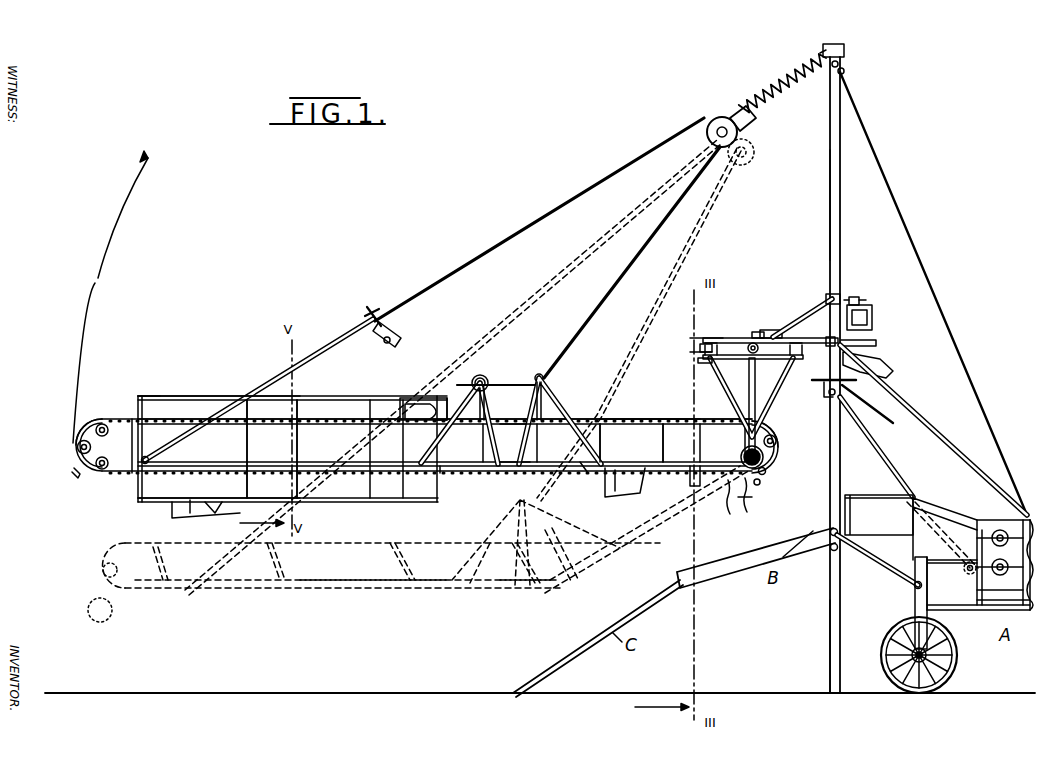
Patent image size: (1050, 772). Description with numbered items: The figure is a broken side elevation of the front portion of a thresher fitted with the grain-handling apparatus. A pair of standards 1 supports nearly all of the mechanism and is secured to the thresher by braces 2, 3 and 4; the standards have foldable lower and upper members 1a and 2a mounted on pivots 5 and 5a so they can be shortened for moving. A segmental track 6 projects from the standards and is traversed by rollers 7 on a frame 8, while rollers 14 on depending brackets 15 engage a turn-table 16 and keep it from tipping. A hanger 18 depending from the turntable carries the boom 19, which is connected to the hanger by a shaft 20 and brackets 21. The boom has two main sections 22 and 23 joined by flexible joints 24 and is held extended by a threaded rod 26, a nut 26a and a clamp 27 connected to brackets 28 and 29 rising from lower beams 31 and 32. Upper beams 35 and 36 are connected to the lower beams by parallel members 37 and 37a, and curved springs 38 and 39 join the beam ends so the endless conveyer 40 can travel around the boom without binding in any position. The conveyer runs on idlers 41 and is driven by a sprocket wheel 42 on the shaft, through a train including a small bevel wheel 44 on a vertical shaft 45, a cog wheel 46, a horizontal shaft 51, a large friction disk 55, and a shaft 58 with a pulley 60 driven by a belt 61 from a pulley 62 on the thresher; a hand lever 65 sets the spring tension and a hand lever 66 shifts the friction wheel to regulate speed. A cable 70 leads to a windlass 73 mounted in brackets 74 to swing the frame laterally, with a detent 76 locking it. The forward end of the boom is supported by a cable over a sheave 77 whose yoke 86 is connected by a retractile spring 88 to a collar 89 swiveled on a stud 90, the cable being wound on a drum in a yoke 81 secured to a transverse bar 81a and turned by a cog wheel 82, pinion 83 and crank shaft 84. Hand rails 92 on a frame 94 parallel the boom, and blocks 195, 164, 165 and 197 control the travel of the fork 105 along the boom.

The standards 1 is at (841, 467).
The foldable lower member 1a is at (822, 629).
The brace 2 is at (882, 571).
The foldable upper member 2a is at (829, 212).
The brace 3 is at (943, 451).
The brace 4 is at (972, 384).
The pivot 5 is at (827, 552).
The pivot 5a is at (829, 297).
The segmental track 6 is at (765, 331).
The rollers 7 is at (791, 325).
The frame 8 is at (700, 340).
The rollers 14 is at (700, 349).
The brackets 15 is at (700, 357).
The turn-table 16 is at (703, 365).
The hanger 18 is at (727, 393).
The boom 19 is at (427, 492).
The shaft 20 is at (760, 486).
The brackets 21 is at (745, 501).
The boom section 22 is at (612, 571).
The boom section 23 is at (425, 607).
The flexible joints 24 is at (510, 427).
The threaded rod 26 is at (512, 383).
The nut 26a is at (476, 376).
The clamp 27 is at (483, 377).
The bracket 28 is at (562, 399).
The bracket 29 is at (488, 404).
The lower beam 31 is at (580, 470).
The lower beam 32 is at (450, 473).
The upper beam 35 is at (627, 419).
The upper beam 36 is at (350, 420).
The parallel members 37 is at (553, 545).
The parallel members 37a is at (392, 571).
The curved spring 38 is at (780, 437).
The curved spring 39 is at (74, 457).
The endless conveyer 40 is at (110, 423).
The idlers 41 is at (73, 444).
The sprocket wheel 42 is at (768, 471).
The small bevel wheel 44 is at (742, 457).
The vertical shaft 45 is at (749, 407).
The cog wheel 46 is at (749, 344).
The horizontal shaft 51 is at (825, 346).
The large friction disk 55 is at (815, 381).
The shaft 58 is at (830, 396).
The pulley 60 is at (822, 396).
The belt 61 is at (903, 470).
The pulley 62 is at (964, 574).
The hand lever 65 is at (894, 374).
The hand lever 66 is at (893, 426).
The cable 70 is at (757, 335).
The windlass 73 is at (874, 322).
The brackets 74 is at (856, 308).
The detent 76 is at (583, 197).
The sheave 77 is at (711, 121).
The yoke 81 is at (281, 381).
The transverse bar 81a is at (143, 463).
The cog wheel 82 is at (398, 334).
The pinion 83 is at (366, 318).
The crank shaft 84 is at (383, 344).
The yoke 86 is at (738, 112).
The retractile spring 88 is at (786, 80).
The collar 89 is at (846, 60).
The stud 90 is at (846, 49).
The hand rails 92 is at (158, 400).
The frame 94 is at (137, 397).
The fork 105 is at (230, 514).
The block 164 is at (73, 470).
The block 165 is at (752, 494).
The block 195 is at (76, 437).
The block 197 is at (731, 514).